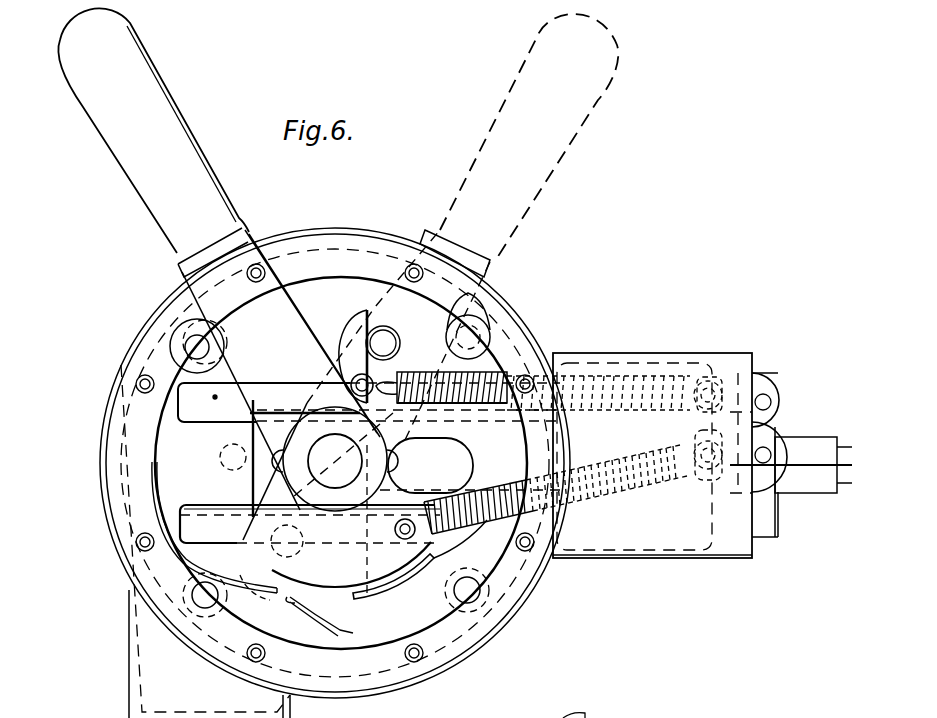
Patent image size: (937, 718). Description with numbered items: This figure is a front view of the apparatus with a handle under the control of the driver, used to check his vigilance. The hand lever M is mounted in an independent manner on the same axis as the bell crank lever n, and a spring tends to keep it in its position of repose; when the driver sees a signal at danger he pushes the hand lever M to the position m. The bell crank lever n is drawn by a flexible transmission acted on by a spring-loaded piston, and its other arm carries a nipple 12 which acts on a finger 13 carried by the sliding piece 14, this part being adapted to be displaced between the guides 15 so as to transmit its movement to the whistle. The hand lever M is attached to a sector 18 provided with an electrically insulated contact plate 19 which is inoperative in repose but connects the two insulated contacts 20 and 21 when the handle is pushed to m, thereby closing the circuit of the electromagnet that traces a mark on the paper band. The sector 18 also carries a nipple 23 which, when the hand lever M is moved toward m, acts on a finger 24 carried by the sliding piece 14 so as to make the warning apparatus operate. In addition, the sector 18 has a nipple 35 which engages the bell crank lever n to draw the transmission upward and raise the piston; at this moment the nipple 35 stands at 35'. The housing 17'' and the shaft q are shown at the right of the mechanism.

The hand lever M is at (219, 274).
The operated position of the hand lever m is at (455, 255).
The bell crank lever n is at (215, 397).
The shaft q is at (791, 455).
The nipple 12 is at (383, 343).
The finger 13 is at (352, 322).
The sliding piece 14 is at (470, 465).
The guides 15 is at (192, 403).
The housing 17'' is at (652, 473).
The sector 18 is at (294, 554).
The contact plate 19 is at (376, 588).
The insulated contact 20 is at (255, 597).
The insulated contact 21 is at (306, 614).
The nipple 23 is at (465, 582).
The finger 24 is at (351, 519).
The nipple 35 is at (179, 529).
The displaced position of nipple 35 35' is at (213, 468).